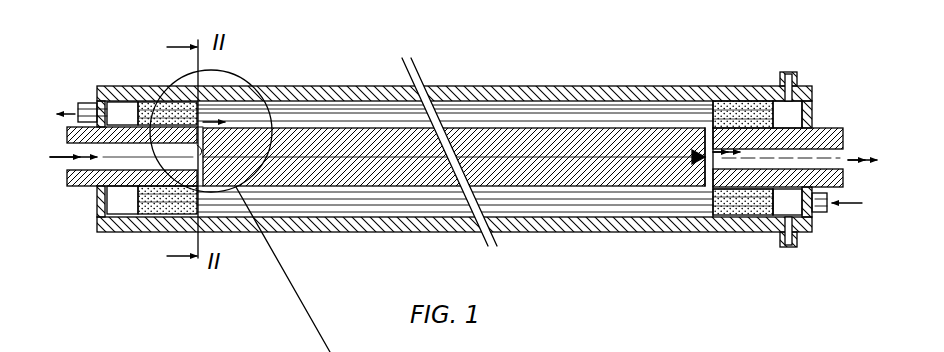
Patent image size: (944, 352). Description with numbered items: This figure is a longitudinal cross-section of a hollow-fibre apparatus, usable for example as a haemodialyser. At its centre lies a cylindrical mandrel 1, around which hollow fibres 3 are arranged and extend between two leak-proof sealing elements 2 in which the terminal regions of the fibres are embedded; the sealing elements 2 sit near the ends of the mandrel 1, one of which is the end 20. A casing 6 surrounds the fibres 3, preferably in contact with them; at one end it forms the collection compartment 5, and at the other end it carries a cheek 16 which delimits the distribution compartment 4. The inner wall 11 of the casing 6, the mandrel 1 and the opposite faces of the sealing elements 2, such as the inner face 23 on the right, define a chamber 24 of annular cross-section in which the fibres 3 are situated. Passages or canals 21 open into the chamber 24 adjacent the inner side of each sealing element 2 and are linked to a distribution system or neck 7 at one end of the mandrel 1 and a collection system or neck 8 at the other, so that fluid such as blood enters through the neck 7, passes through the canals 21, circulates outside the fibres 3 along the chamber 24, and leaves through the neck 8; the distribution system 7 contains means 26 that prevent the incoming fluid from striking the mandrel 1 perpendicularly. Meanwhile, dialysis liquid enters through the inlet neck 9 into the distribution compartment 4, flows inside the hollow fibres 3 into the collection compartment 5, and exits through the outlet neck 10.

The cylindrical mandrel 1 is at (548, 140).
The leak-proof sealing element 2 is at (147, 108).
The hollow fibres 3 is at (612, 120).
The distribution compartment 4 is at (793, 118).
The collection compartment 5 is at (122, 112).
The casing 6 is at (507, 98).
The distribution system or neck 7 is at (72, 184).
The collection system or neck 8 is at (818, 152).
The inlet neck 9 is at (818, 212).
The outlet neck 10 is at (80, 105).
The inner wall of the casing 11 is at (463, 100).
The cheek 16 is at (797, 247).
The end of the mandrel 20 is at (751, 190).
The passages or canals 21 is at (711, 172).
The inner face of the sealing element 23 is at (713, 190).
The chamber of annular cross-section 24 is at (557, 193).
The means of preventing fluid impact 26 is at (703, 161).